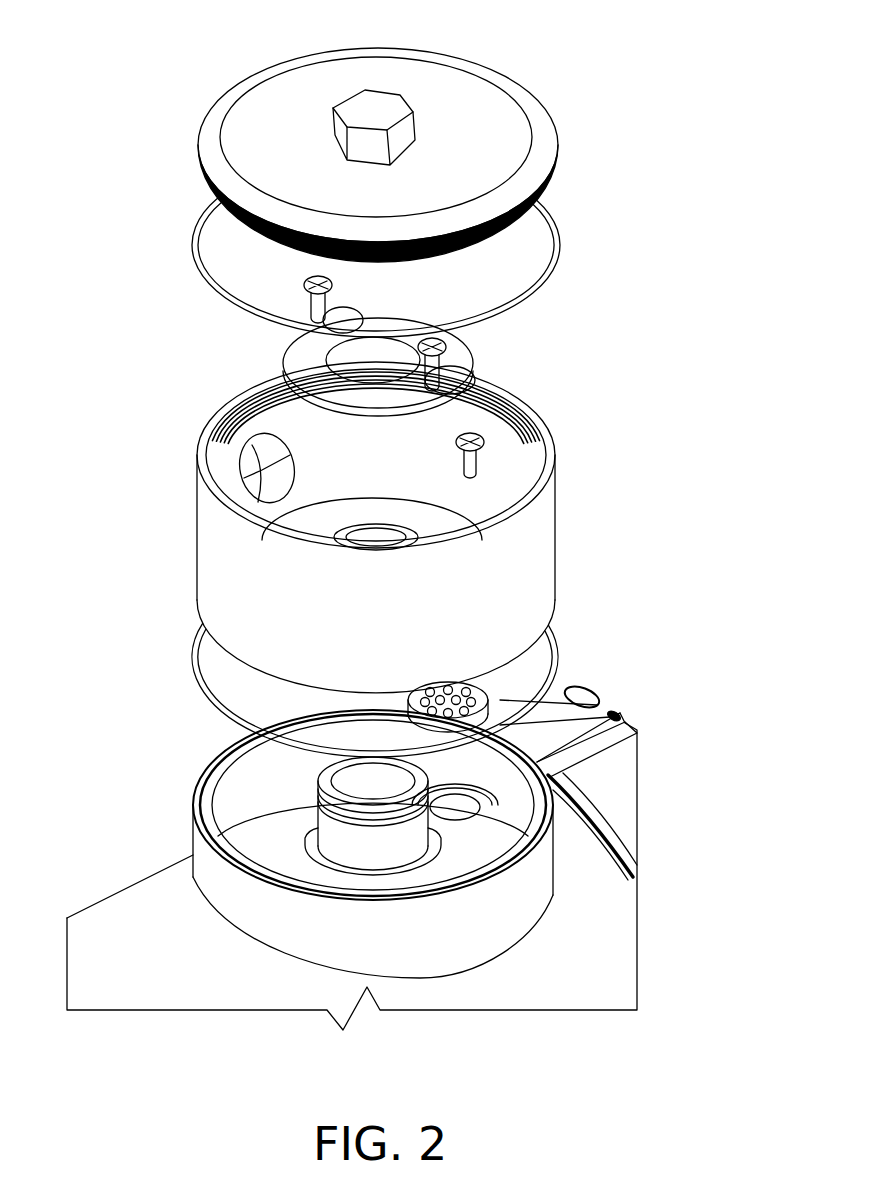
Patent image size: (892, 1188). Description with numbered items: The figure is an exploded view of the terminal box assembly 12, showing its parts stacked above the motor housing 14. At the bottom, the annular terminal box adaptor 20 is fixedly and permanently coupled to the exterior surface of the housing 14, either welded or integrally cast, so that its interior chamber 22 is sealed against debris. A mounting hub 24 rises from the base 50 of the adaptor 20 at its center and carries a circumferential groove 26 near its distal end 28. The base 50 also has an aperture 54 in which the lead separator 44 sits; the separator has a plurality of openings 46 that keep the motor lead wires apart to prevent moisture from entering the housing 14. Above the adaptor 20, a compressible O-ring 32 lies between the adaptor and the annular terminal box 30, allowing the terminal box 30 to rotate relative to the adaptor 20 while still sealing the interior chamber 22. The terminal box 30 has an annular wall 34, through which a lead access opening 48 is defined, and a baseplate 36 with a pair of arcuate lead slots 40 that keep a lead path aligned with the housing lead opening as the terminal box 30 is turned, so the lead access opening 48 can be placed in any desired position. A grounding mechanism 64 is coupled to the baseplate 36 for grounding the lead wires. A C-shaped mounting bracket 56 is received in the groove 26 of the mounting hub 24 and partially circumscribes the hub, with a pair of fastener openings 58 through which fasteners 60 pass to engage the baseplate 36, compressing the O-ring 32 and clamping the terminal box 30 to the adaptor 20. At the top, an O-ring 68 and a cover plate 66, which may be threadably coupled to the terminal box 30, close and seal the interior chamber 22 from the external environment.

The terminal box assembly 12 is at (136, 72).
The housing 14 is at (374, 879).
The terminal box adaptor 20 is at (382, 844).
The interior chamber 22 is at (470, 850).
The mounting hub 24 is at (380, 848).
The circumferential groove 26 is at (471, 813).
The distal end 28 is at (304, 764).
The terminal box 30 is at (361, 527).
The O-ring 32 is at (212, 700).
The annular wall 34 is at (215, 600).
The baseplate 36 is at (316, 534).
The lead slots 40 is at (402, 537).
The lead separator 44 is at (605, 714).
The openings 46 is at (490, 672).
The lead access opening 48 is at (244, 469).
The base 50 is at (520, 822).
The aperture 54 is at (565, 787).
The mounting bracket 56 is at (330, 367).
The fastener openings 58 is at (290, 322).
The fastener 60 is at (313, 288).
The grounding mechanism 64 is at (480, 465).
The cover plate 66 is at (250, 150).
The O-ring 68 is at (560, 252).